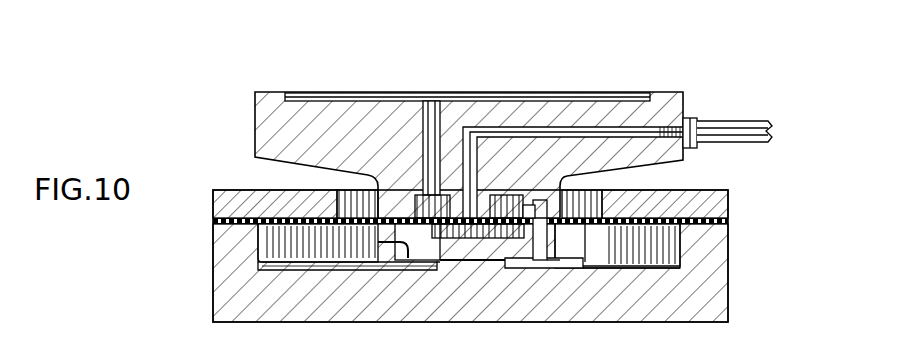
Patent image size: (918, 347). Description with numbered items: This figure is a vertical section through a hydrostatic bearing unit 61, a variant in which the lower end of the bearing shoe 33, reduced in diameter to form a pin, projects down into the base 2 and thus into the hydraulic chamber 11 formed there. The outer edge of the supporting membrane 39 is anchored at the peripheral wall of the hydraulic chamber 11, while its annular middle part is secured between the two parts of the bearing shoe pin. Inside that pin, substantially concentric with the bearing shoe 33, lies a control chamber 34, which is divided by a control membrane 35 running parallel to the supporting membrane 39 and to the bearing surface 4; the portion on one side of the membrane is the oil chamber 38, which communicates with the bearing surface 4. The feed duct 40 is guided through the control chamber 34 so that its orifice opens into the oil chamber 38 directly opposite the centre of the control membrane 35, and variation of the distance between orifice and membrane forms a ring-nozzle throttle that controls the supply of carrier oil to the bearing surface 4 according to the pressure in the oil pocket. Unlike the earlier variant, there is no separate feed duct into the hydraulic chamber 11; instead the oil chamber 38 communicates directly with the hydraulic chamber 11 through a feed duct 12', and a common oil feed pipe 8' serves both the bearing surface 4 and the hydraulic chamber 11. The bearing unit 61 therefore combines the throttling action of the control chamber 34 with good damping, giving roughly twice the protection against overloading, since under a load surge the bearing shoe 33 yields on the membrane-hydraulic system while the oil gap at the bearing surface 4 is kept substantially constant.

The base 2 is at (237, 289).
The bearing surface 4 is at (356, 90).
The common oil feed pipe 8' is at (734, 158).
The hydraulic chamber 11 is at (336, 252).
The feed duct 12' is at (577, 230).
The bearing shoe 33 is at (266, 114).
The control chamber 34 is at (482, 240).
The control membrane 35 is at (408, 250).
The oil chamber 38 is at (508, 195).
The supporting membrane 39 is at (648, 227).
The feed duct 40 is at (505, 127).
The bearing unit 61 is at (735, 84).